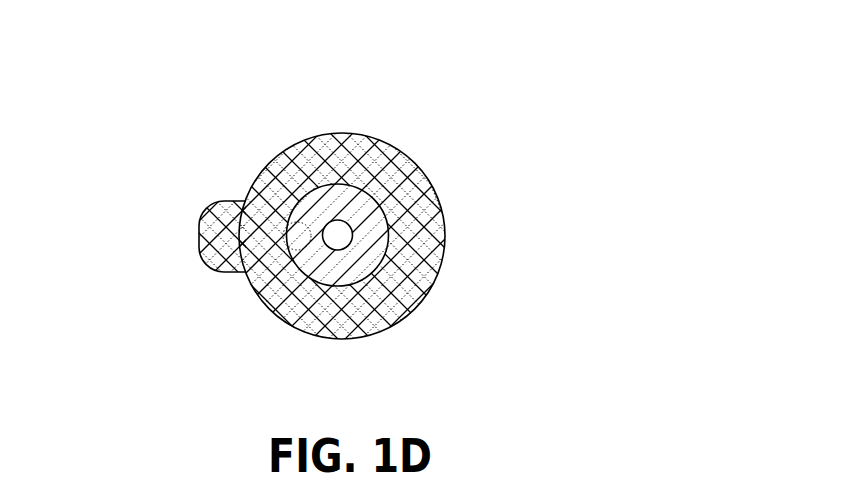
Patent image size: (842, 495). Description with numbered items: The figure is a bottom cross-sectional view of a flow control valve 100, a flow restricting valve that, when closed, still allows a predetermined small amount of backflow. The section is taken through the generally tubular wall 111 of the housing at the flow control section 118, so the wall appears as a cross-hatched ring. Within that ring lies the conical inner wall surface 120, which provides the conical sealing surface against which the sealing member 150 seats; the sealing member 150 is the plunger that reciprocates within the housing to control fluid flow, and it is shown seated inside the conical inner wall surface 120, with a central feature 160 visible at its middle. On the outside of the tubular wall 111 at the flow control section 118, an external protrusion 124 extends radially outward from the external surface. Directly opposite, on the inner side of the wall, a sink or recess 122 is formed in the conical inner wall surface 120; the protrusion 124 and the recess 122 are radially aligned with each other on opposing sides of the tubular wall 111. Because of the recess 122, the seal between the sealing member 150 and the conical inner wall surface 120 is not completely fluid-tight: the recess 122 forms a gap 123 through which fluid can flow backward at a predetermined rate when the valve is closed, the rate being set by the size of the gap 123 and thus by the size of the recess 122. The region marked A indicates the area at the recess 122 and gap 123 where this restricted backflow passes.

The flow control valve 100 is at (688, 137).
The tubular wall 111 is at (352, 152).
The flow control section 118 is at (262, 160).
The conical inner wall surface 120 is at (373, 275).
The recess 122 is at (287, 235).
The gap 123 is at (287, 238).
The external protrusion 124 is at (207, 248).
The sealing member 150 is at (365, 250).
The central lumen 160 is at (340, 236).
The axis A is at (293, 232).